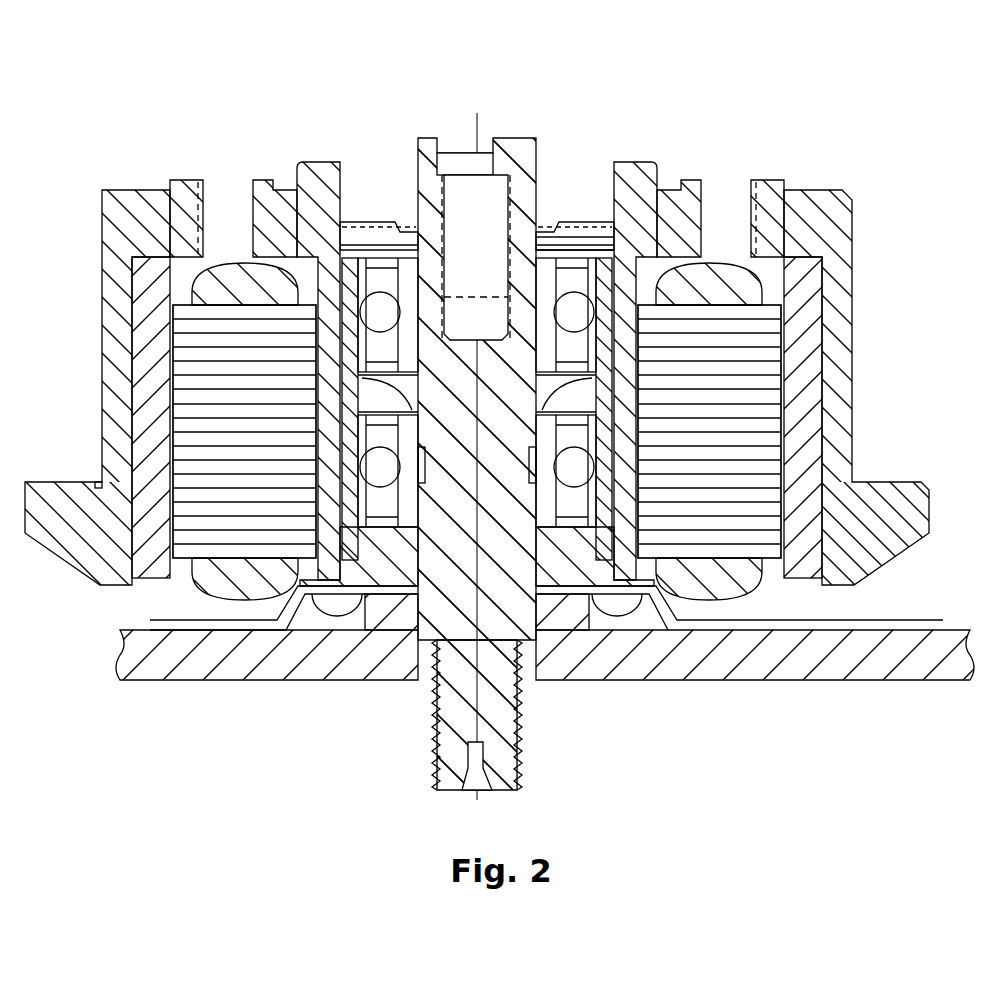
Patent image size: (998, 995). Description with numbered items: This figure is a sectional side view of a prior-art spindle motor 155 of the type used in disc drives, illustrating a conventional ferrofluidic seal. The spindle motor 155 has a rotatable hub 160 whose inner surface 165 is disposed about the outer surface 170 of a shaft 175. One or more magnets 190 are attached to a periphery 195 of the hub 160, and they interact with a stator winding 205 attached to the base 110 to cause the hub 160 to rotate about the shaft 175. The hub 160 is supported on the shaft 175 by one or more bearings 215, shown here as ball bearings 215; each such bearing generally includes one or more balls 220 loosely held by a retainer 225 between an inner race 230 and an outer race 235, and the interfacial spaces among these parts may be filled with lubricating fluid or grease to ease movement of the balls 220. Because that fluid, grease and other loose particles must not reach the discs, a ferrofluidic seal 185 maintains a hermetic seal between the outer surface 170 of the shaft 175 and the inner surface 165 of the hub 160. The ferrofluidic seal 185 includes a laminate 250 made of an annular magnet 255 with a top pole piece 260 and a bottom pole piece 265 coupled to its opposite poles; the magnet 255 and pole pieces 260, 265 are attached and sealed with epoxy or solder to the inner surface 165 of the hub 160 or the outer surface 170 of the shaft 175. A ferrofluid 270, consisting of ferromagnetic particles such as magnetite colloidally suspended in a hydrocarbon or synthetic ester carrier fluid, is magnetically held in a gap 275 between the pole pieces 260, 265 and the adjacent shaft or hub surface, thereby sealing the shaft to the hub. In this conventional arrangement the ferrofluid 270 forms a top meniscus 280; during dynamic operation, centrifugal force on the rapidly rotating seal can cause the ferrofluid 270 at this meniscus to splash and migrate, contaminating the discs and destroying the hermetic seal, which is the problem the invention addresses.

The base 110 is at (652, 681).
The spindle motor 155 is at (152, 158).
The rotatable hub 160 is at (630, 175).
The inner surface 165 is at (640, 205).
The outer surface 170 is at (537, 133).
The shaft 175 is at (440, 222).
The ferrofluidic seal 185 is at (352, 152).
The magnets 190 is at (812, 385).
The periphery 195 is at (838, 440).
The stator winding 205 is at (775, 338).
The bearings 215 is at (572, 414).
The balls 220 is at (410, 487).
The retainer 225 is at (540, 500).
The inner race 230 is at (531, 345).
The outer race 235 is at (620, 468).
The laminate 250 is at (265, 235).
The annular magnet 255 is at (615, 232).
The top pole piece 260 is at (615, 218).
The bottom pole piece 265 is at (615, 246).
The ferrofluid 270 is at (517, 222).
The gap 275 is at (546, 213).
The top meniscus 280 is at (410, 230).